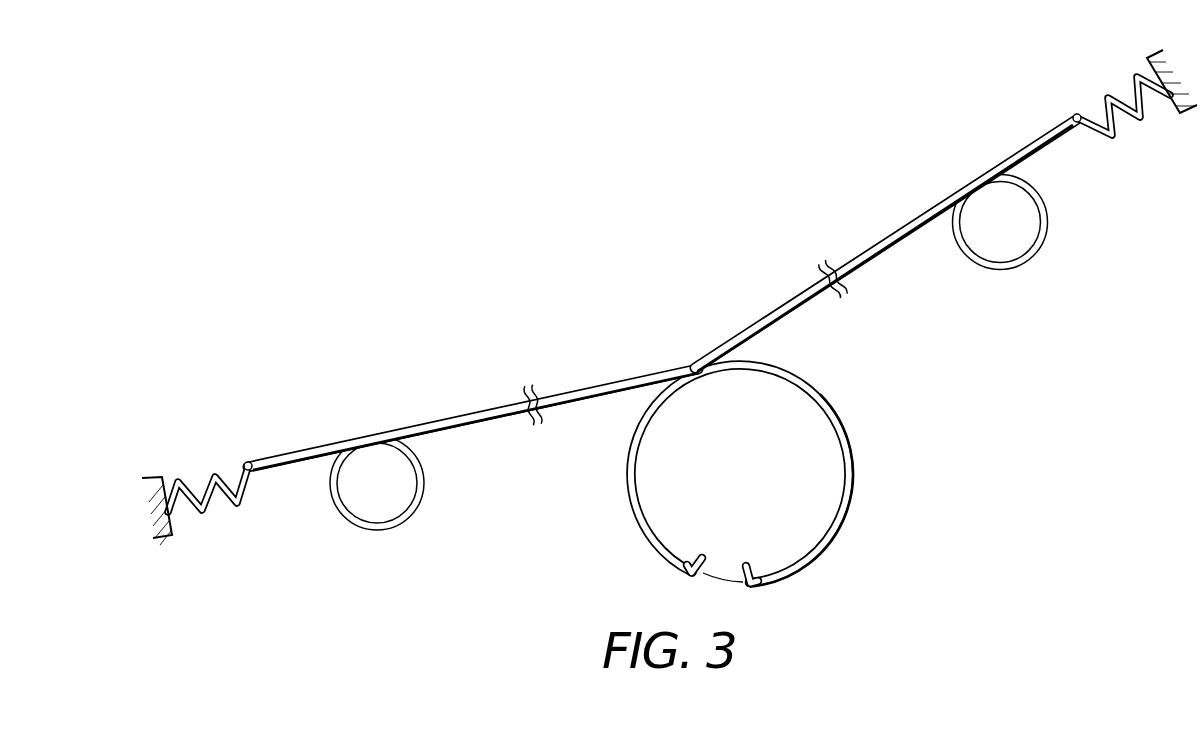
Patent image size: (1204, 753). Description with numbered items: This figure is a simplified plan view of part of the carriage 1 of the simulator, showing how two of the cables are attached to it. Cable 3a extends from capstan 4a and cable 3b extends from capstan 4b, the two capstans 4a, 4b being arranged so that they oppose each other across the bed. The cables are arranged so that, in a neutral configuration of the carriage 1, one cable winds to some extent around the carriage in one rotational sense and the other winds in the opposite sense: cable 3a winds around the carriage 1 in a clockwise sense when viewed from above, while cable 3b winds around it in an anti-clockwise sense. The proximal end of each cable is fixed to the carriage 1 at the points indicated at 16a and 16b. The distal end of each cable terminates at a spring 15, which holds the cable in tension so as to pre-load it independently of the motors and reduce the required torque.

The carriage 1 is at (832, 473).
The cable 3a is at (597, 388).
The cable 3b is at (888, 237).
The capstan 4a is at (381, 507).
The capstan 4b is at (1017, 240).
The spring 15 is at (216, 468).
The fixing of proximal cable end 16a is at (746, 565).
The fixing of proximal cable end 16b is at (702, 557).